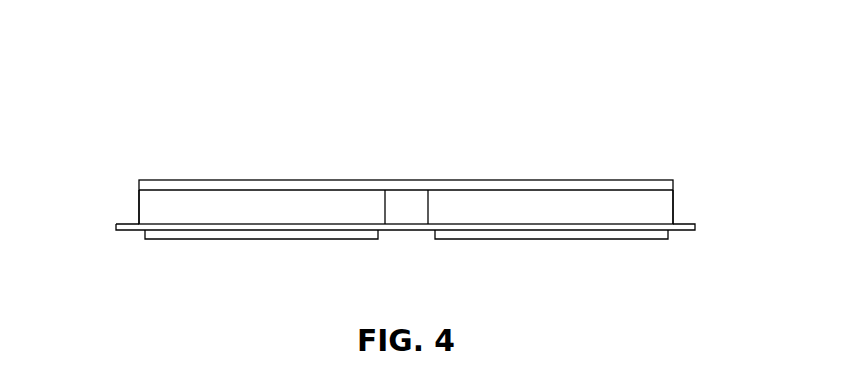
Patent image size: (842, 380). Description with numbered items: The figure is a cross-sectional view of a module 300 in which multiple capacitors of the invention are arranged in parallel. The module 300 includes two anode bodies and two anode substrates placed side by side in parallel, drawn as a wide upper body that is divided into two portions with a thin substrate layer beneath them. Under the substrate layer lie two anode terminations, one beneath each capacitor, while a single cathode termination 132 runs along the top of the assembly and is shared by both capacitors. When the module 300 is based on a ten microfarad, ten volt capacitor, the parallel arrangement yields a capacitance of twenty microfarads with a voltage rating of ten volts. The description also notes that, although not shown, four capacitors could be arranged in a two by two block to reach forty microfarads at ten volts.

The module 300 is at (256, 100).
The cathode termination 132 is at (254, 180).